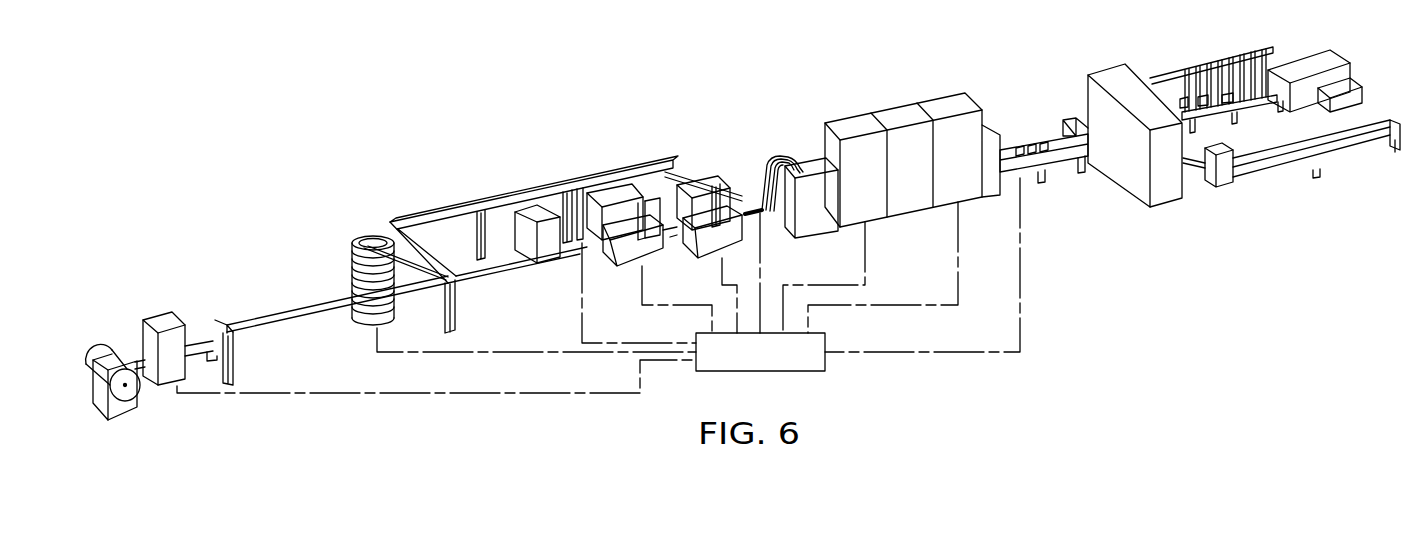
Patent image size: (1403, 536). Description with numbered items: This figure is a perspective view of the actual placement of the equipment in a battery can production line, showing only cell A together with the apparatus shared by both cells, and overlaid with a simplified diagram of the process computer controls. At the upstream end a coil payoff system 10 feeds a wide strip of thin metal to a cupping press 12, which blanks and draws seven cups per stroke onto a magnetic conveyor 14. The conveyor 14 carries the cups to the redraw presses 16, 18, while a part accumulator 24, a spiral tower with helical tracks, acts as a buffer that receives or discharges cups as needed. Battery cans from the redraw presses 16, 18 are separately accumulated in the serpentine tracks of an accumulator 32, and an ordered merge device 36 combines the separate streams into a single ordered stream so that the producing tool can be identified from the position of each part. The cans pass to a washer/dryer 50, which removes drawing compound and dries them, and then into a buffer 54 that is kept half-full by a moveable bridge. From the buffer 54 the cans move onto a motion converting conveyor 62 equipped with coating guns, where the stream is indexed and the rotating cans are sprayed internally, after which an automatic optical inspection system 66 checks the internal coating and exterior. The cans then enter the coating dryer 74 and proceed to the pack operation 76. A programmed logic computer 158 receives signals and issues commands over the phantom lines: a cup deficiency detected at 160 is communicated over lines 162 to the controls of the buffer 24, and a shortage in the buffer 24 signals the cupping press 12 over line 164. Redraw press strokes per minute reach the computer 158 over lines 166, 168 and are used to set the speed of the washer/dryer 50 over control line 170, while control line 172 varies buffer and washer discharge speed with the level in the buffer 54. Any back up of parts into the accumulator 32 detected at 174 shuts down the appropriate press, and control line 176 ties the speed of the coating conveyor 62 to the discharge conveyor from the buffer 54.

The coil payoff system 10 is at (112, 352).
The cupping press 12 is at (165, 318).
The magnetic conveyor 14 is at (221, 320).
The redraw press 16 is at (600, 258).
The redraw press 18 is at (678, 250).
The part accumulator 24 is at (360, 251).
The accumulator 32 is at (775, 157).
The ordered merge device 36 is at (815, 212).
The washer/dryer 50 is at (910, 97).
The buffer 54 is at (960, 103).
The motion converting conveyor 62 is at (1060, 150).
The automatic optical inspection system 66 is at (1080, 126).
The coating dryer 74 is at (1136, 173).
The pack operation 76 is at (1253, 97).
The programmed logic computer 158 is at (770, 372).
The cup deficiency detection point 160 is at (582, 313).
The signal lines 162 is at (496, 352).
The signal line 164 is at (464, 392).
The signal line 166 is at (668, 310).
The signal line 168 is at (728, 286).
The control line 170 is at (867, 265).
The control line 172 is at (960, 287).
The back-up detection point 174 is at (762, 257).
The control line 176 is at (1022, 252).